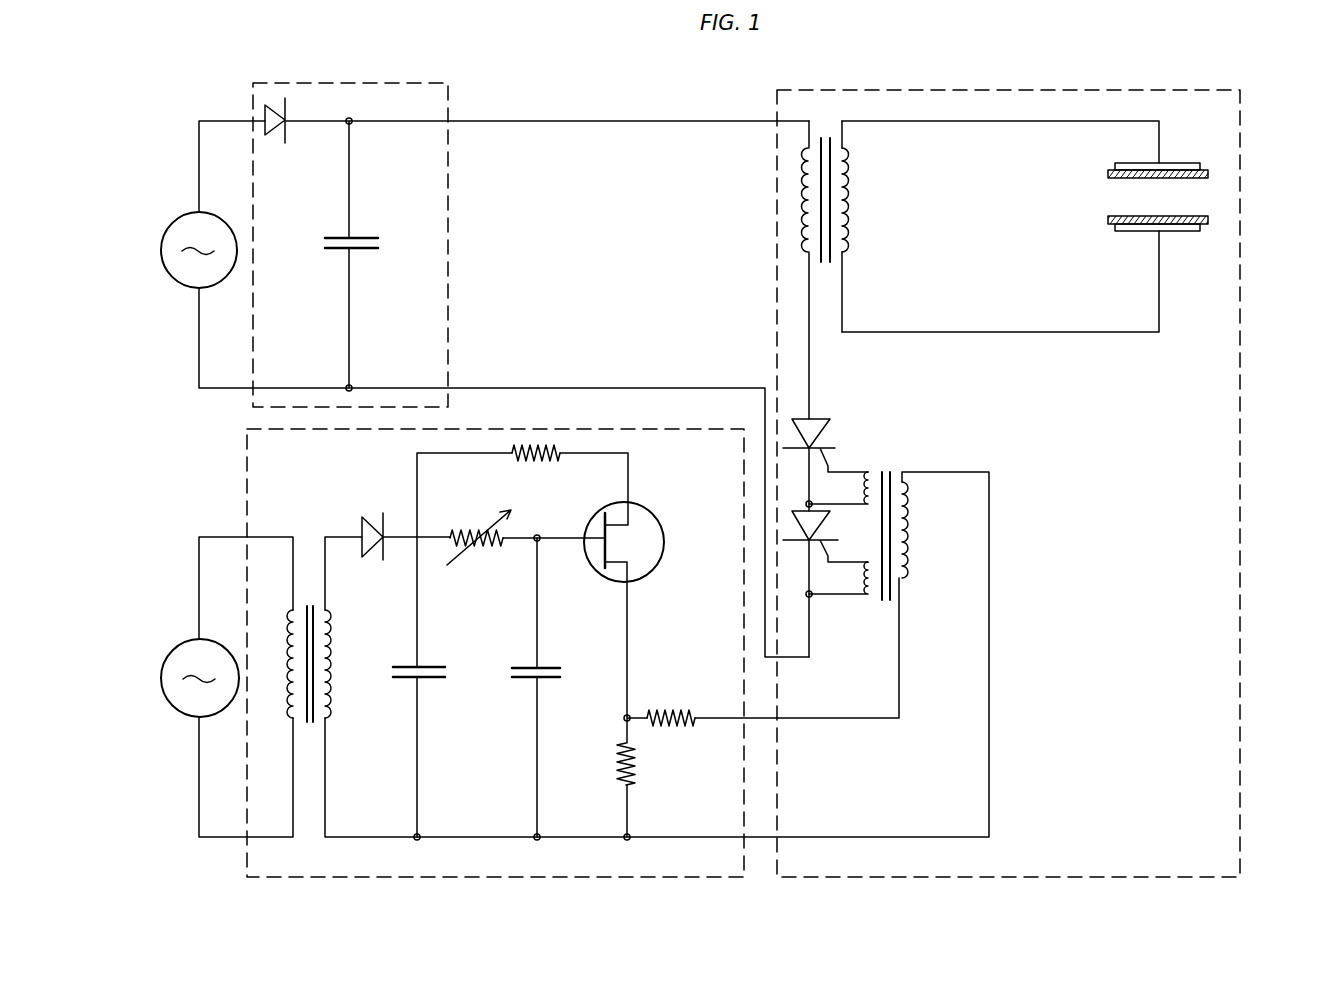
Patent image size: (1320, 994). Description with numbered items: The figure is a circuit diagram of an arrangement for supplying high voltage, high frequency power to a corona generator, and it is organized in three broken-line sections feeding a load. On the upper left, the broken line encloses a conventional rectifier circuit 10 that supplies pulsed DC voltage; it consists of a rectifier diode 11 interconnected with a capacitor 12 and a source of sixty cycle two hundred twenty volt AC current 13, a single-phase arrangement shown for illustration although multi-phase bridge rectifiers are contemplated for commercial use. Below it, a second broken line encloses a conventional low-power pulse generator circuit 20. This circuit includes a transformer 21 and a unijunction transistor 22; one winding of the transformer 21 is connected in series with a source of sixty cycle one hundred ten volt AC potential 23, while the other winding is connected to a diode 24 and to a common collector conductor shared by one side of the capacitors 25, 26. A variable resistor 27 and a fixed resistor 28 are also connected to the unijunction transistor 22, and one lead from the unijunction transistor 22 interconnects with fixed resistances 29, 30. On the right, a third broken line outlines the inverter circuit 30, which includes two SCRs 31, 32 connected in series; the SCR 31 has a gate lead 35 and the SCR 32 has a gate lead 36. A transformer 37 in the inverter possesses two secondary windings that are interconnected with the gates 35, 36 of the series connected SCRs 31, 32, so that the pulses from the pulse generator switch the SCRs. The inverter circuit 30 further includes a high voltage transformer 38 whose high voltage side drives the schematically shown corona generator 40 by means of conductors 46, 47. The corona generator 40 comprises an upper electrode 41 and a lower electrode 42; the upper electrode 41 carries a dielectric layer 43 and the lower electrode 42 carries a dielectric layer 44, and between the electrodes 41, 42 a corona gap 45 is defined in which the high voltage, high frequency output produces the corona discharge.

The rectifier circuit 10 is at (403, 83).
The rectifier diode 11 is at (276, 134).
The capacitor 12 is at (362, 238).
The source of 60 cycle 220 volt AC current 13 is at (178, 222).
The pulse generator circuit 20 is at (586, 881).
The transformer 21 is at (309, 570).
The unijunction transistor 22 is at (661, 531).
The source of 60 cycle 110 volt AC potential 23 is at (164, 682).
The diode 24 is at (370, 549).
The capacitor 25 is at (426, 666).
The capacitor 26 is at (556, 668).
The variable resistor 27 is at (511, 531).
The fixed resistor 28 is at (548, 449).
The fixed resistance 29 is at (639, 780).
The inverter circuit 30 is at (669, 712).
The SCR 31 is at (815, 420).
The SCR 32 is at (818, 530).
The gate lead 35 is at (833, 460).
The gate lead 36 is at (848, 566).
The transformer 37 is at (892, 471).
The high voltage transformer 38 is at (824, 135).
The corona generator 40 is at (1061, 191).
The upper electrode 41 is at (1182, 165).
The lower electrode 42 is at (1178, 233).
The dielectric layer 43 is at (1181, 178).
The dielectric layer 44 is at (1195, 218).
The corona gap 45 is at (1127, 193).
The conductor 46 is at (1170, 142).
The conductor 47 is at (1142, 315).